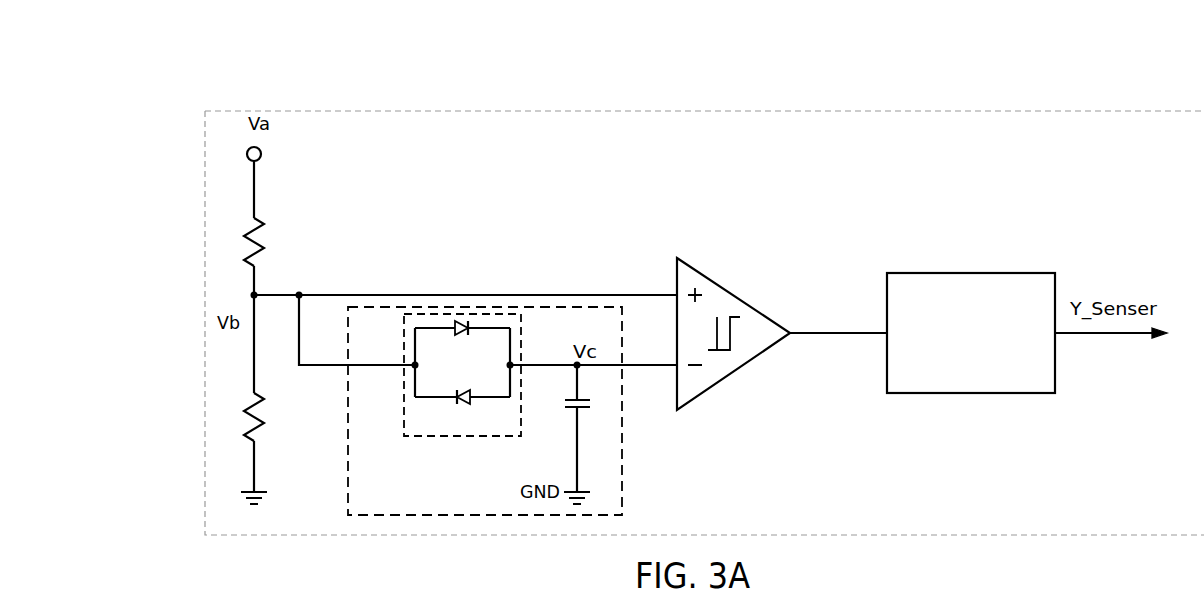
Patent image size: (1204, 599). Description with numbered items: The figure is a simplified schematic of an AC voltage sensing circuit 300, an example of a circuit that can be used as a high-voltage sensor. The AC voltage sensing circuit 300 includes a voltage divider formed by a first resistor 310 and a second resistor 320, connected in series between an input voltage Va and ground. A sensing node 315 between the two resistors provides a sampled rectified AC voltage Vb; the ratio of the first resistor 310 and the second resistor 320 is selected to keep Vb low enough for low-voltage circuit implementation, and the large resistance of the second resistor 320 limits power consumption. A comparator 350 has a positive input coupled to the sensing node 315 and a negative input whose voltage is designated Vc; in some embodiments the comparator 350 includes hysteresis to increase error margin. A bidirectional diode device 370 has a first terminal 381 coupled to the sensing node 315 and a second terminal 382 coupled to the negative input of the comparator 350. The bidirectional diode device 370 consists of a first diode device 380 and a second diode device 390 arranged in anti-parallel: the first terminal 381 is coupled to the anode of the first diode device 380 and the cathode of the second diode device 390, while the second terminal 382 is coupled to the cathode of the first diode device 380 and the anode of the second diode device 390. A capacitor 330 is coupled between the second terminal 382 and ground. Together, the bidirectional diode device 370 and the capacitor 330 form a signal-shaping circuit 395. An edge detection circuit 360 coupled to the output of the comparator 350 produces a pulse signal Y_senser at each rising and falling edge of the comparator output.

The AC voltage sensing circuit 300 is at (669, 110).
The first resistor 310 is at (281, 417).
The sensing node 315 is at (444, 295).
The second resistor 320 is at (281, 242).
The capacitor 330 is at (562, 428).
The comparator 350 is at (683, 258).
The edge detection circuit 360 is at (967, 273).
The bidirectional diode device 370 is at (470, 437).
The first diode device 380 is at (462, 340).
The first terminal 381 is at (413, 363).
The second terminal 382 is at (512, 363).
The second diode device 390 is at (462, 408).
The signal-shaping circuit 395 is at (622, 462).